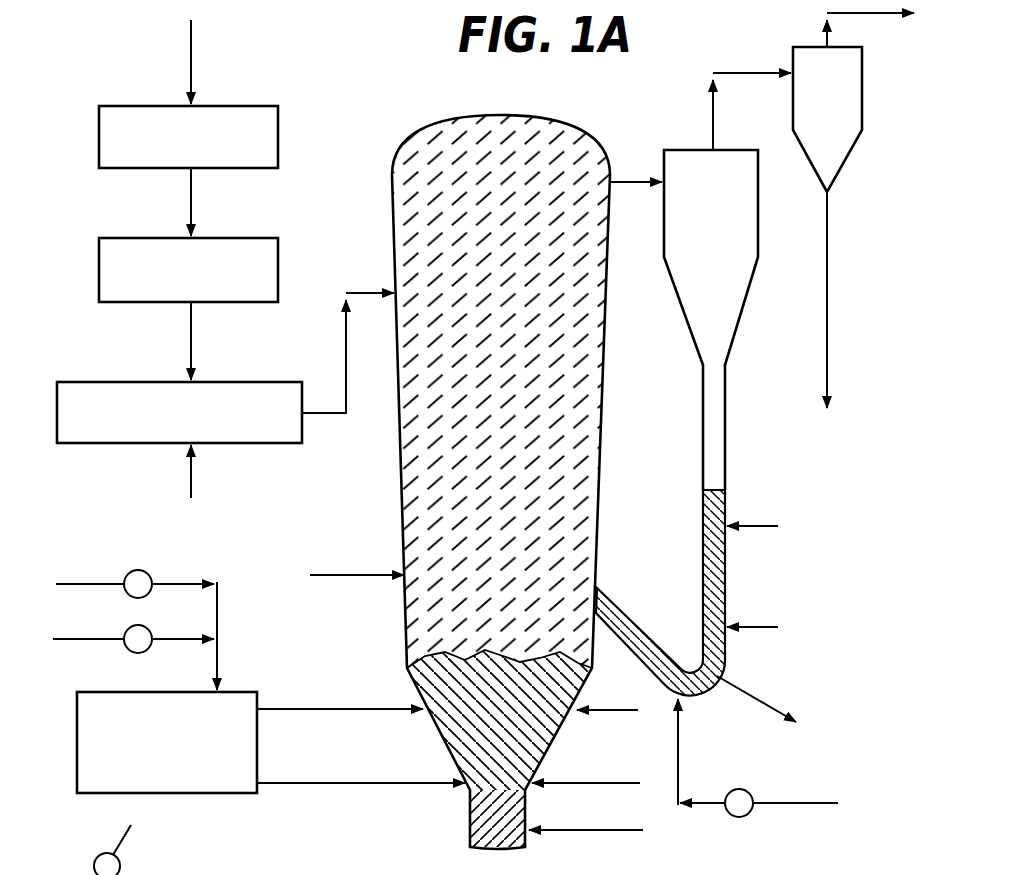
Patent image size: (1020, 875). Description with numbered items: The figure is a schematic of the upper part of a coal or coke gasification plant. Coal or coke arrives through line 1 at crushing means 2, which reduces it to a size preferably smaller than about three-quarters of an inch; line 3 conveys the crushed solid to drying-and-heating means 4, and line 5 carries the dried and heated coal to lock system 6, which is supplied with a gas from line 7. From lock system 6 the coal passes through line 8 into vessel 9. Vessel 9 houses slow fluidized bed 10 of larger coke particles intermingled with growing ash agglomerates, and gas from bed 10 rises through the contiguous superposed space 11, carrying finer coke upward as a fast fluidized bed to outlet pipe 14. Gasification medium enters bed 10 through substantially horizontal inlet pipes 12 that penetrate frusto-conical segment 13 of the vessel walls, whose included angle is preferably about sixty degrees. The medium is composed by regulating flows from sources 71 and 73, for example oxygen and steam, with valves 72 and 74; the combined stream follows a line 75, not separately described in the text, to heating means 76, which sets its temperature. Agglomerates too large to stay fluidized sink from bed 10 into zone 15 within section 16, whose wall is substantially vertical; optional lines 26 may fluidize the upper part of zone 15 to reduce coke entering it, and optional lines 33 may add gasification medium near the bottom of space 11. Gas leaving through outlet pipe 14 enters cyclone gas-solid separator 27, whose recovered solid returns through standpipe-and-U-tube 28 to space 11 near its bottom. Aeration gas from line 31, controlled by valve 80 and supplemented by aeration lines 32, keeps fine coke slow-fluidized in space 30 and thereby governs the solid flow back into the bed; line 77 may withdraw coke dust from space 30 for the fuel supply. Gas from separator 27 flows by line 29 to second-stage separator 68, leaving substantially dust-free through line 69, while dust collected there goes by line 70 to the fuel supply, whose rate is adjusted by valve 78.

The line 1 is at (232, 61).
The crushing means 2 is at (167, 137).
The line 3 is at (165, 202).
The drying-and-heating means 4 is at (167, 270).
The line 5 is at (158, 341).
The lock system 6 is at (171, 396).
The line 7 is at (224, 473).
The line 8 is at (344, 353).
The vessel 9 is at (478, 482).
The slow fluidized bed 10 is at (516, 736).
The superposed space 11 is at (517, 337).
The inlet pipes 12 is at (448, 746).
The frusto-conical segment 13 is at (405, 748).
The outlet pipe 14 is at (637, 149).
The zone 15 is at (559, 807).
The section 16 is at (350, 838).
The optional lines 26 is at (586, 849).
The cyclone gas-solid separator 27 is at (733, 320).
The standpipe-and-U-tube 28 is at (694, 568).
The line 29 is at (752, 88).
The space 30 is at (660, 593).
The line 31 is at (758, 775).
The aeration lines 32 is at (778, 556).
The optional lines 33 is at (357, 548).
The second-stage cyclone gas-solid separator 68 is at (860, 119).
The line 69 is at (836, 23).
The line 70 is at (864, 300).
The source 71 is at (136, 606).
The valve 72 is at (160, 562).
The source 73 is at (133, 616).
The valve 74 is at (160, 617).
The combined gas line 75 is at (250, 645).
The heating means 76 is at (148, 742).
The line 77 is at (763, 687).
The valve 78 is at (135, 850).
The valve 80 is at (759, 820).